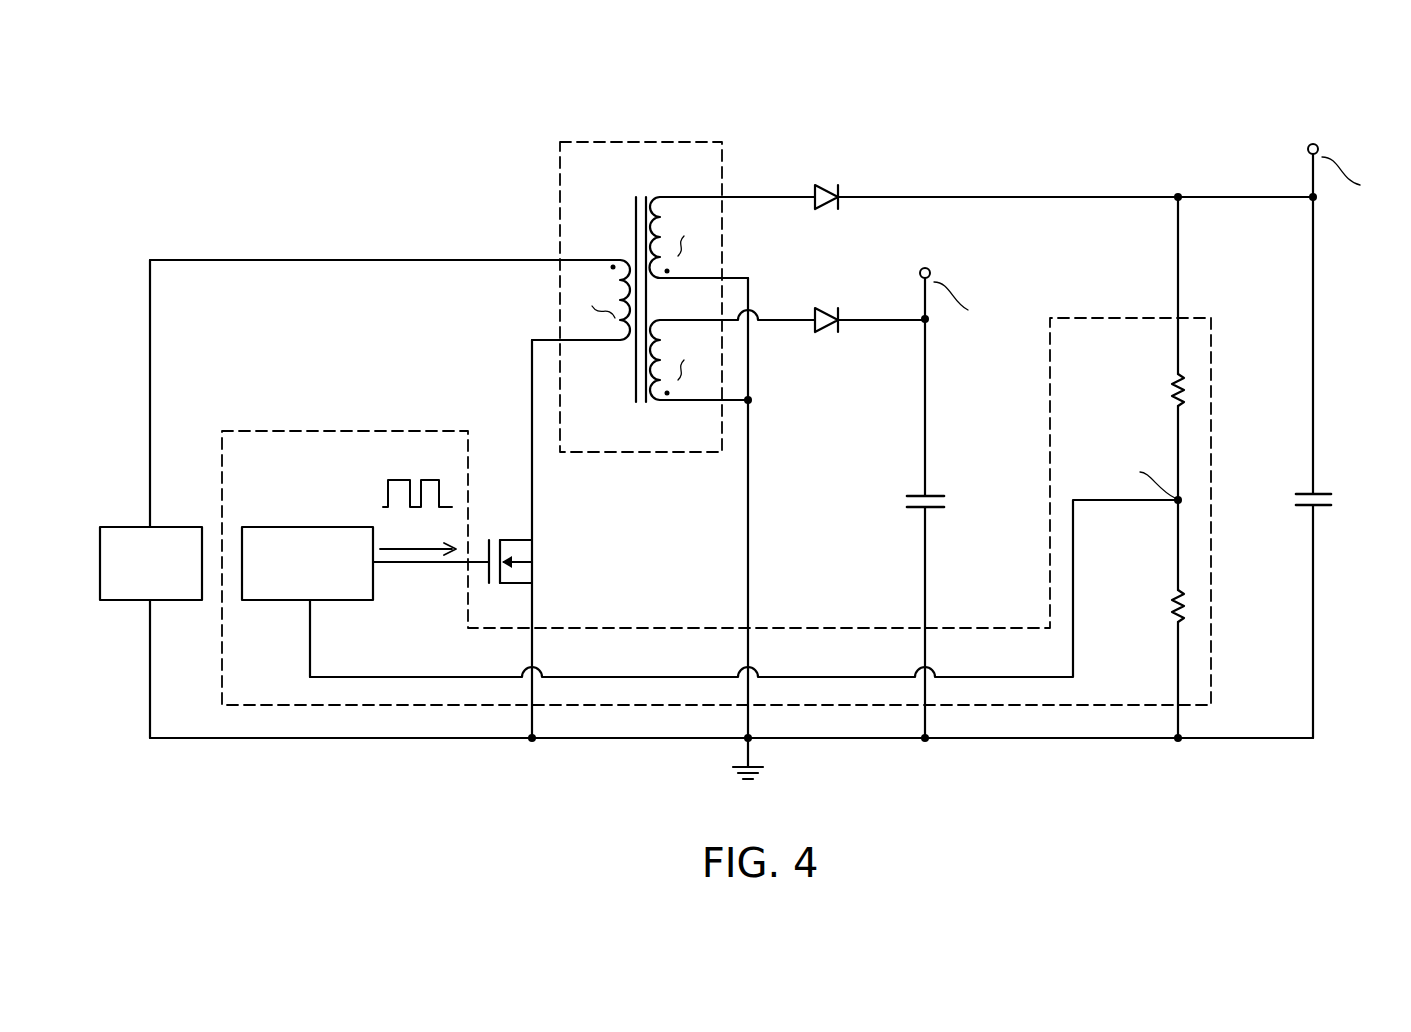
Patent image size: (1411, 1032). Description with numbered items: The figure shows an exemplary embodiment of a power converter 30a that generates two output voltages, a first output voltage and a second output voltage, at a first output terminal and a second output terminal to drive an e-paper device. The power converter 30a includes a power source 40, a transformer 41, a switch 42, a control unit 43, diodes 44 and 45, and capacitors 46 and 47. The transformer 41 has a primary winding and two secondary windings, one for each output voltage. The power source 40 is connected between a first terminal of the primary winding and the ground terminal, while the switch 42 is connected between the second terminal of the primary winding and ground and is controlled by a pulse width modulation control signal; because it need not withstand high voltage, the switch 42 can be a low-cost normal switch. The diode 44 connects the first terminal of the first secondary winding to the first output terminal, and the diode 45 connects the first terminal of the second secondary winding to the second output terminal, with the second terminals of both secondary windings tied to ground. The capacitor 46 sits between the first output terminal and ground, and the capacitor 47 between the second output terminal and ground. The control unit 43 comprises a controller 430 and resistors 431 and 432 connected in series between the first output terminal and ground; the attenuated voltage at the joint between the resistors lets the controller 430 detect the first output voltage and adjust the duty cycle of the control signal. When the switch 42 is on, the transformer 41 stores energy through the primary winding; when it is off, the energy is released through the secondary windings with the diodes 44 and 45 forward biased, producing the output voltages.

The power converter 30a is at (117, 97).
The power source 40 is at (182, 526).
The transformer 41 is at (645, 141).
The switch 42 is at (514, 528).
The control unit 43 is at (296, 430).
The controller 430 is at (316, 526).
The resistor 431 is at (1172, 392).
The resistor 432 is at (1172, 606).
The diode 44 is at (830, 184).
The diode 45 is at (830, 306).
The capacitor 46 is at (1303, 488).
The capacitor 47 is at (914, 491).